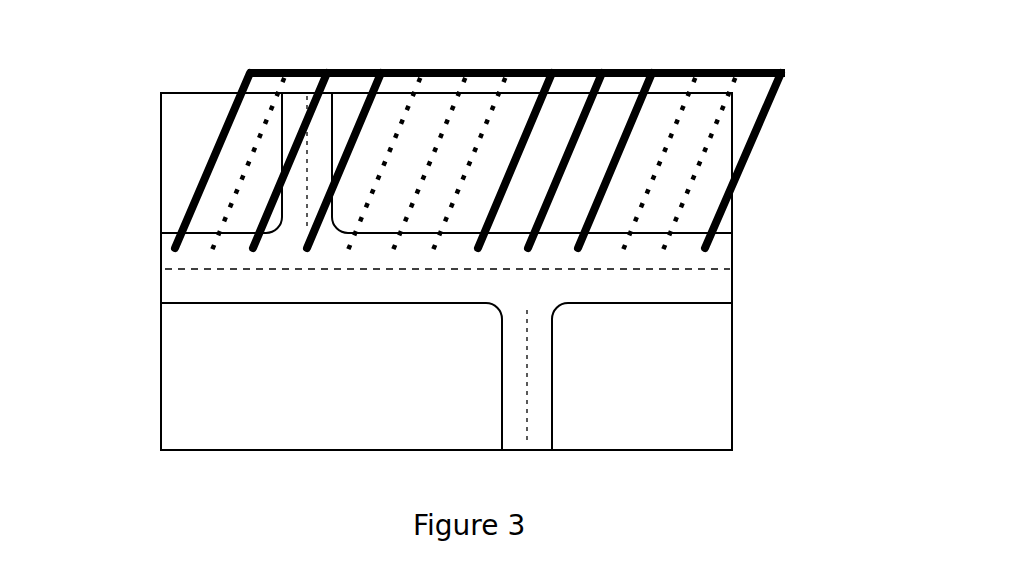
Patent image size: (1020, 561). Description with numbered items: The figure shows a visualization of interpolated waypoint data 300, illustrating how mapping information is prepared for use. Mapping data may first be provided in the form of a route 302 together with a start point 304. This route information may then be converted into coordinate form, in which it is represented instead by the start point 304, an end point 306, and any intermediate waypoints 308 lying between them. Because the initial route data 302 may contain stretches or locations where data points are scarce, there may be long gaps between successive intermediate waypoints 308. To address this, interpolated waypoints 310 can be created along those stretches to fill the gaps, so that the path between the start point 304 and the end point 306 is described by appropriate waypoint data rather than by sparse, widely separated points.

The visualization of interpolated waypoint data 300 is at (392, 238).
The route 302 is at (553, 151).
The start point 304 is at (173, 247).
The end point 306 is at (713, 250).
The intermediate waypoints 308 is at (528, 253).
The interpolated waypoints 310 is at (393, 250).